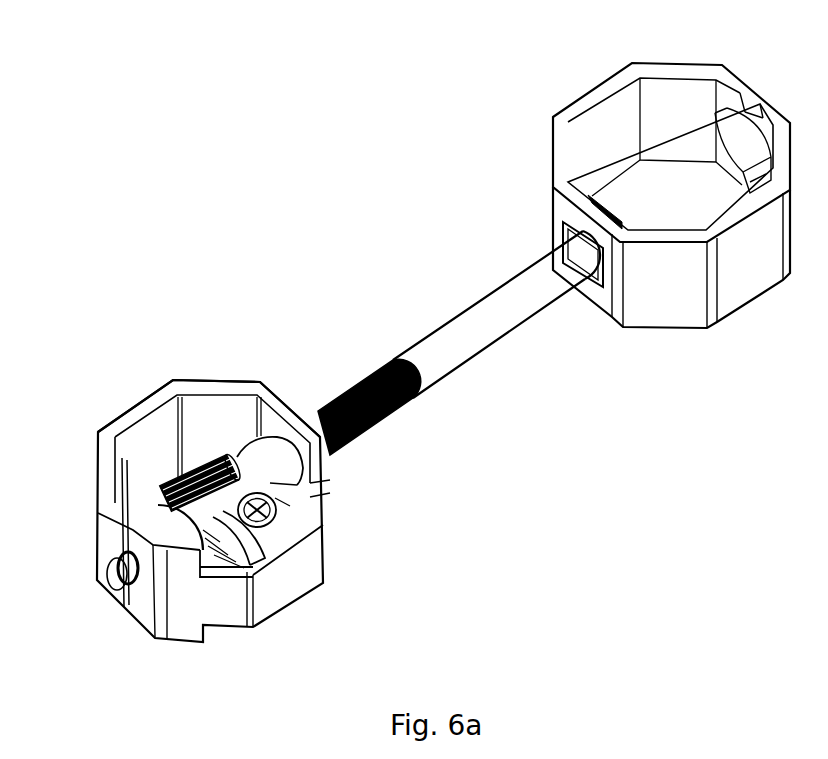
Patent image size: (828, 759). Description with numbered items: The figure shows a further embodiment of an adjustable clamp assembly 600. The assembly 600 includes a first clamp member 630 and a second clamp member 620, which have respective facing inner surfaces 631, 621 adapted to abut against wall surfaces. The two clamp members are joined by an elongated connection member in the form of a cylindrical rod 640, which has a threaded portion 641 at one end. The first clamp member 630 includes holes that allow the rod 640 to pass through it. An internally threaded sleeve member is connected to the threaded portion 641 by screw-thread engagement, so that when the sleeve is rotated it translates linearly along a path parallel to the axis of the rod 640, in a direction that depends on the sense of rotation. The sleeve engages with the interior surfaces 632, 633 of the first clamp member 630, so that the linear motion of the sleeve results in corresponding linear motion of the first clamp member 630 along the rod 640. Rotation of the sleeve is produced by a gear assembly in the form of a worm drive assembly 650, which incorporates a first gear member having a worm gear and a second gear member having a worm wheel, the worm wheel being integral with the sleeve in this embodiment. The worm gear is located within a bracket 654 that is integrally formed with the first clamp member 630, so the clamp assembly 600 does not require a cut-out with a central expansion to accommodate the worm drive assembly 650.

The clamp assembly 600 is at (652, 447).
The second clamp member 620 is at (602, 92).
The inner surface 621 is at (565, 212).
The first clamp member 630 is at (137, 410).
The inner surface 631 is at (293, 397).
The interior surface 632 is at (267, 417).
The interior surface 633 is at (130, 497).
The cylindrical rod 640 is at (510, 310).
The threaded portion 641 is at (363, 432).
The worm drive assembly 650 is at (218, 645).
The bracket 654 is at (288, 503).